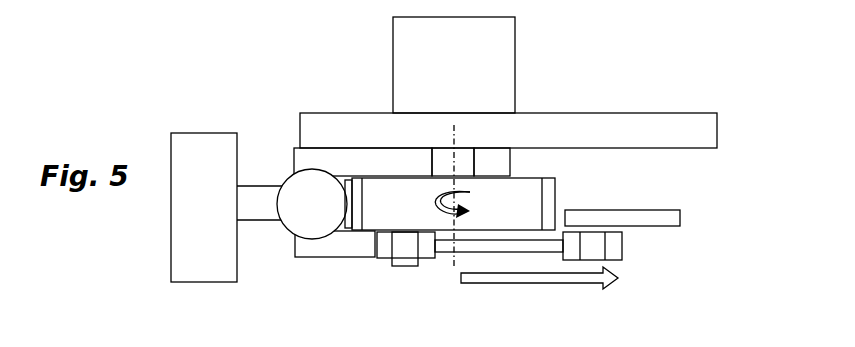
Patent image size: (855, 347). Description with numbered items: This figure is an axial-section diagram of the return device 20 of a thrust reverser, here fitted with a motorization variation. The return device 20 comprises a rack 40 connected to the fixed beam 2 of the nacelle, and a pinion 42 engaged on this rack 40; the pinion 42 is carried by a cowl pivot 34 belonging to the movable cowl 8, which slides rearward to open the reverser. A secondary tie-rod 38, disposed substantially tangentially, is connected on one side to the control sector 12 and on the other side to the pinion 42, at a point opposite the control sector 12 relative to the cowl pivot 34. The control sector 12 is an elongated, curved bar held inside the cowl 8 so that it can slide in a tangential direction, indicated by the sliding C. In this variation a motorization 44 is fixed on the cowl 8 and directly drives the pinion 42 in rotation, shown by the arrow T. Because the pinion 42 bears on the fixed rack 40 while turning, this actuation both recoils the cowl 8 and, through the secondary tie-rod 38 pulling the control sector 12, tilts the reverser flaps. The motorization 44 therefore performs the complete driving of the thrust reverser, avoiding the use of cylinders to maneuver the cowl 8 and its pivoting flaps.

The fixed beam 2 is at (203, 283).
The movable cowl 8 is at (600, 112).
The control sector 12 is at (670, 226).
The return device 20 is at (722, 97).
The cowl pivot 34 is at (442, 152).
The secondary tie-rod 38 is at (452, 254).
The rack 40 is at (285, 232).
The pinion 42 is at (555, 190).
The motorization 44 is at (515, 58).